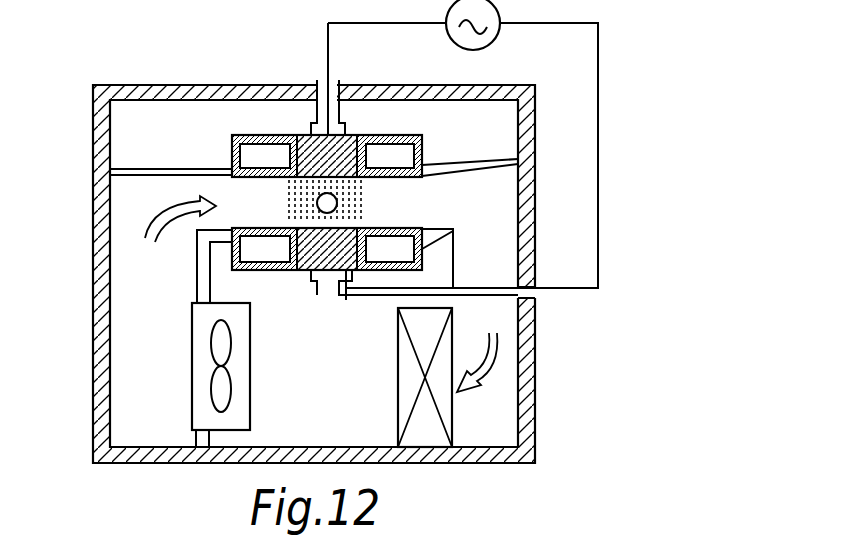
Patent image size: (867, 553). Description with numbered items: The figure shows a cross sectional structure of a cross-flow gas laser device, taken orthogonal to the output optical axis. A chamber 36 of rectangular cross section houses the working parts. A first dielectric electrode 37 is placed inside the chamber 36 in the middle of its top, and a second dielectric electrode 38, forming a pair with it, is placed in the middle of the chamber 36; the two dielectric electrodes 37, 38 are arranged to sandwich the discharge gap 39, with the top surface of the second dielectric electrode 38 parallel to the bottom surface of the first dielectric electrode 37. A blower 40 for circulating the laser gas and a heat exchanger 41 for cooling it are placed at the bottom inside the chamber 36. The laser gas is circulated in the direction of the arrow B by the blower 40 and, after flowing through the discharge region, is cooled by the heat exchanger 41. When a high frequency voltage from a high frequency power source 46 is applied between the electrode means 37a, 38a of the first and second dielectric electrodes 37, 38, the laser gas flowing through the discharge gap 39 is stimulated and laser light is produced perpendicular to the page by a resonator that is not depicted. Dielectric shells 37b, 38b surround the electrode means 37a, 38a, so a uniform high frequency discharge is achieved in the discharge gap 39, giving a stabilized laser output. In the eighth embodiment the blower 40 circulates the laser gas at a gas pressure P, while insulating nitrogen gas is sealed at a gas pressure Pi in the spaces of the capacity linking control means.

The chamber 36 is at (93, 244).
The first dielectric electrode 37 is at (299, 135).
The electrode means 37a is at (345, 135).
The dielectric shell 37b is at (233, 152).
The second dielectric electrode 38 is at (297, 270).
The electrode means 38a is at (348, 288).
The dielectric shell 38b is at (232, 255).
The discharge gap 39 is at (365, 194).
The blower 40 is at (242, 400).
The heat exchanger 41 is at (400, 408).
The high frequency power source 46 is at (505, 32).
The gas pressure P is at (444, 232).
The gas pressure Pi is at (405, 162).
The arrow B is at (150, 221).